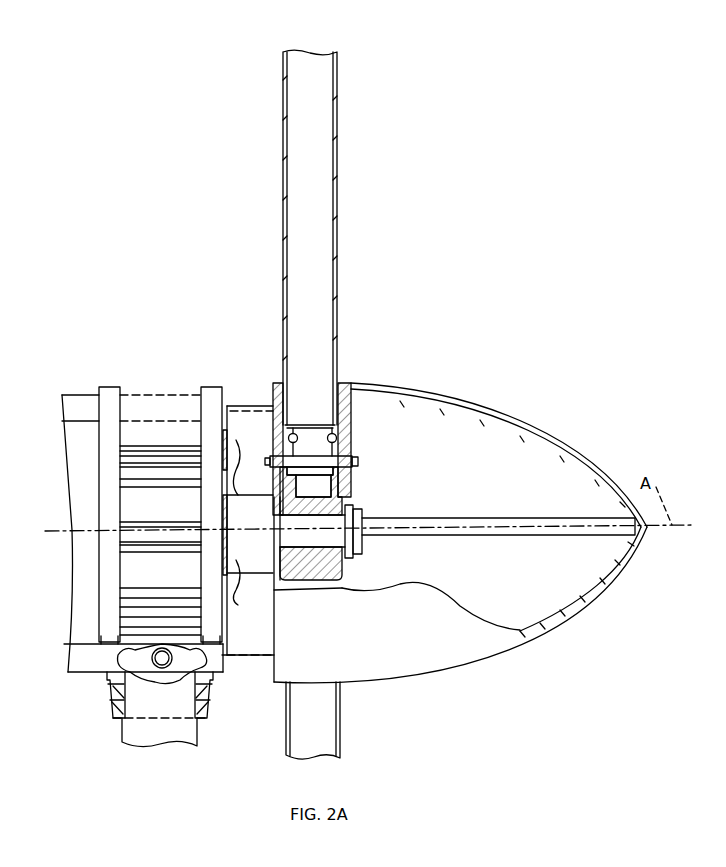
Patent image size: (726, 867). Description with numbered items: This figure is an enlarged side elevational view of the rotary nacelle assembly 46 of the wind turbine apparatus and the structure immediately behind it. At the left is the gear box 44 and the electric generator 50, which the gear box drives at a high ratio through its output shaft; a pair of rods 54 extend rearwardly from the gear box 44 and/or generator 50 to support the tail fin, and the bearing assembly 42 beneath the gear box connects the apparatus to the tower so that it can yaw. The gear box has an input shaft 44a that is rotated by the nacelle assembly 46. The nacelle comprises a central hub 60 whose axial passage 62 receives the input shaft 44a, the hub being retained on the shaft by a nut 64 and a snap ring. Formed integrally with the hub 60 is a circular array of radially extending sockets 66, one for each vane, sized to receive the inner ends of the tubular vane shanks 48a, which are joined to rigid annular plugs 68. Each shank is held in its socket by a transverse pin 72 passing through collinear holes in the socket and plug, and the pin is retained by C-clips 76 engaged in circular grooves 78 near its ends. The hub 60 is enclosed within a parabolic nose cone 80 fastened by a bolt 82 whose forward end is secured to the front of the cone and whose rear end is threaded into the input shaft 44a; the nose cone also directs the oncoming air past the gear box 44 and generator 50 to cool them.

The bearing assembly 42 is at (190, 727).
The gear box 44 is at (200, 390).
The input shaft 44a is at (318, 535).
The rotary nacelle assembly 46 is at (548, 336).
The vane shanks 48a is at (337, 185).
The electric generator 50 is at (96, 585).
The rods 54 is at (92, 395).
The hub 60 is at (345, 506).
The axial passage 62 is at (300, 575).
The nut 64 is at (362, 552).
The sockets 66 is at (353, 400).
The annular plugs 68 is at (305, 425).
The transverse pins 72 is at (355, 460).
The C-clips 76 is at (269, 458).
The circular grooves 78 is at (349, 478).
The parabolic nose cone 80 is at (530, 425).
The bolt 82 is at (528, 518).